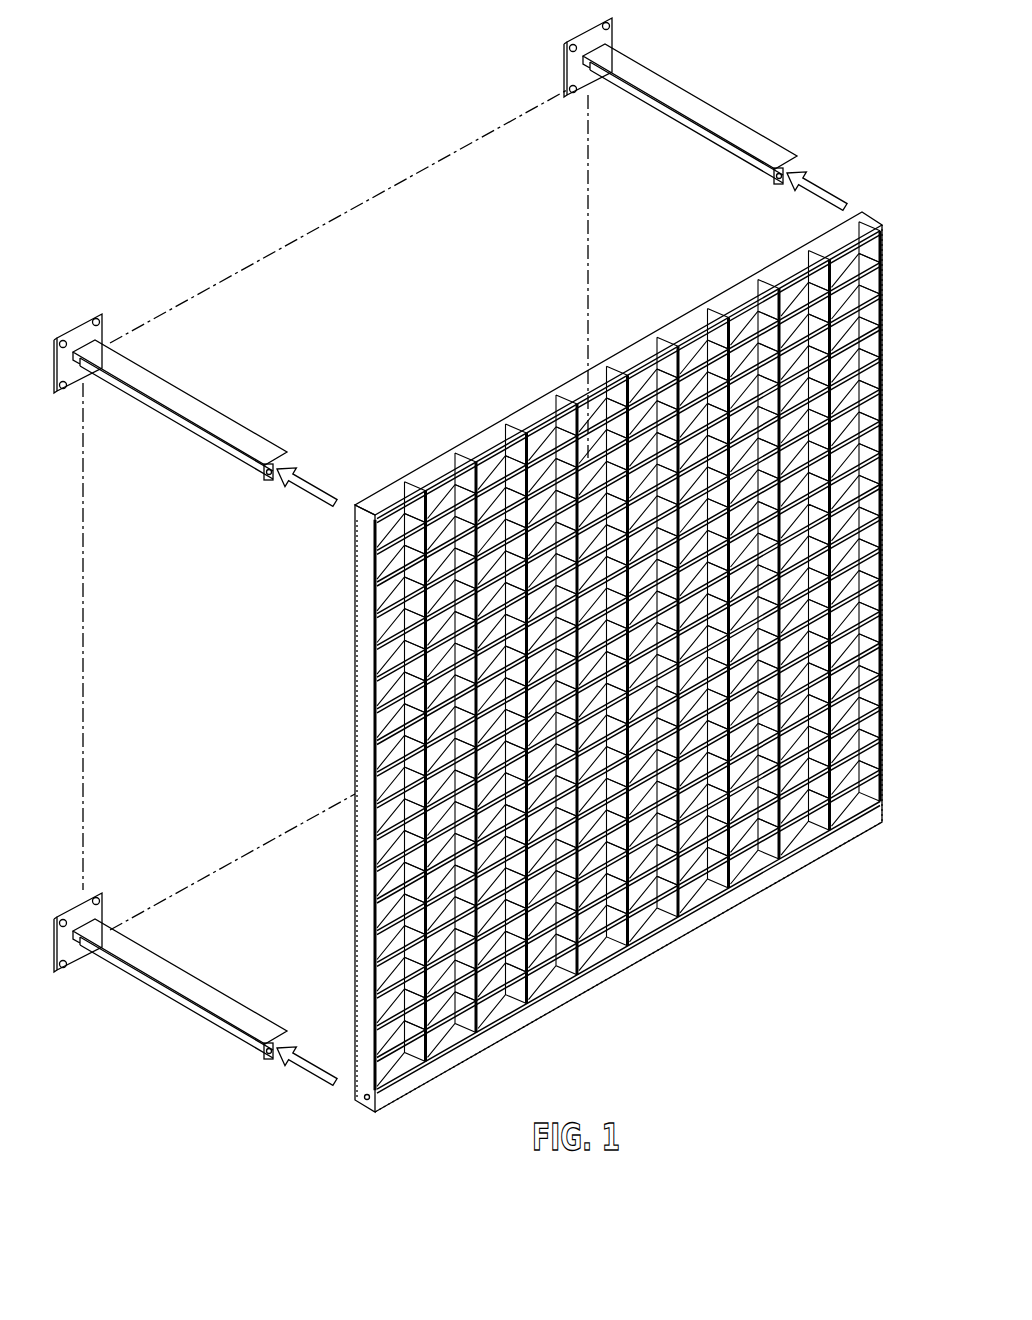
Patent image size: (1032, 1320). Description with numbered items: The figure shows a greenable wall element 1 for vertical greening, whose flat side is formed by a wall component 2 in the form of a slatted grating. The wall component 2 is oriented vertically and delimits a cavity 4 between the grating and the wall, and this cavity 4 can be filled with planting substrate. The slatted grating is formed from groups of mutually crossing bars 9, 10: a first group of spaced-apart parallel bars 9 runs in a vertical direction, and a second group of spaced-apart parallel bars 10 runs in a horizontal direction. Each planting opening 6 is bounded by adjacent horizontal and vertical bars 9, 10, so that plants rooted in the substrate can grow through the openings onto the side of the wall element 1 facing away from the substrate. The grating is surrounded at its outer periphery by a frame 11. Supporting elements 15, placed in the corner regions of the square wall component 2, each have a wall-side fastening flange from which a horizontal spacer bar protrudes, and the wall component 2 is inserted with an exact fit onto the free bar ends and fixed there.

The wall element 1 is at (786, 98).
The wall component 2 is at (642, 421).
The cavity 4 is at (455, 252).
The planting opening 6 is at (392, 628).
The bar 9 is at (517, 470).
The bar 10 is at (458, 852).
The frame 11 is at (757, 293).
The supporting element 15 is at (648, 126).